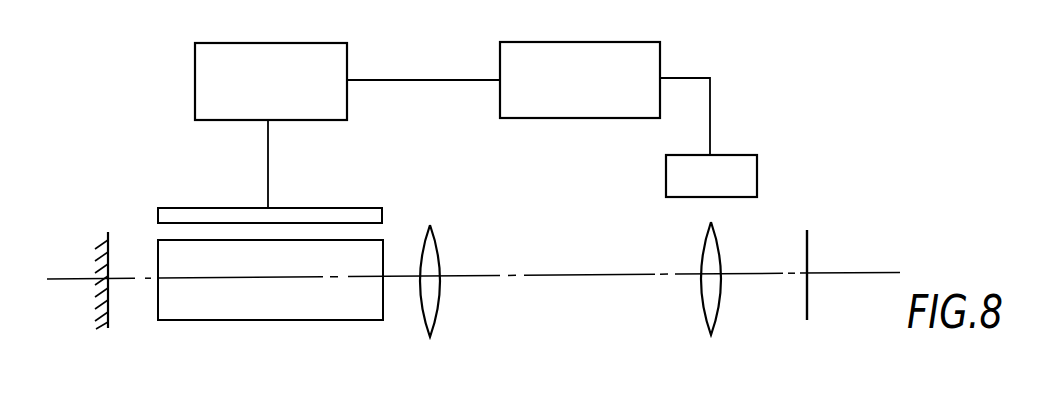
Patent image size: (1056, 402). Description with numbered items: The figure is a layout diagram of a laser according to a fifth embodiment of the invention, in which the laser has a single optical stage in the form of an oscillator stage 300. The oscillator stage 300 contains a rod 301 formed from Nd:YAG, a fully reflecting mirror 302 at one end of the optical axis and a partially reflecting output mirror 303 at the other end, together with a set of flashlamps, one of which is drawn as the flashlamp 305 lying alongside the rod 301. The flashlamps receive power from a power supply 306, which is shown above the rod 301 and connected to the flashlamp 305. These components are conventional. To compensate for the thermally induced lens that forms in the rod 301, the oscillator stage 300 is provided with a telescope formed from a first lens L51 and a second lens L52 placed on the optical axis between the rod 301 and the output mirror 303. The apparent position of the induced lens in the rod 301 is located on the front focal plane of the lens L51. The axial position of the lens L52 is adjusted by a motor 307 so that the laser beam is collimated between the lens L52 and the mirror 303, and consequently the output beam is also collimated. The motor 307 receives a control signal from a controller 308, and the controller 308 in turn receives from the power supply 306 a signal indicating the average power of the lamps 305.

The oscillator stage 300 is at (223, 325).
The rod 301 is at (342, 313).
The fully reflecting mirror 302 is at (108, 316).
The partially reflecting output mirror 303 is at (807, 312).
The flashlamp 305 is at (382, 213).
The power supply 306 is at (323, 120).
The motor 307 is at (757, 183).
The controller 308 is at (550, 118).
The lens L51 is at (438, 318).
The lens L52 is at (717, 317).